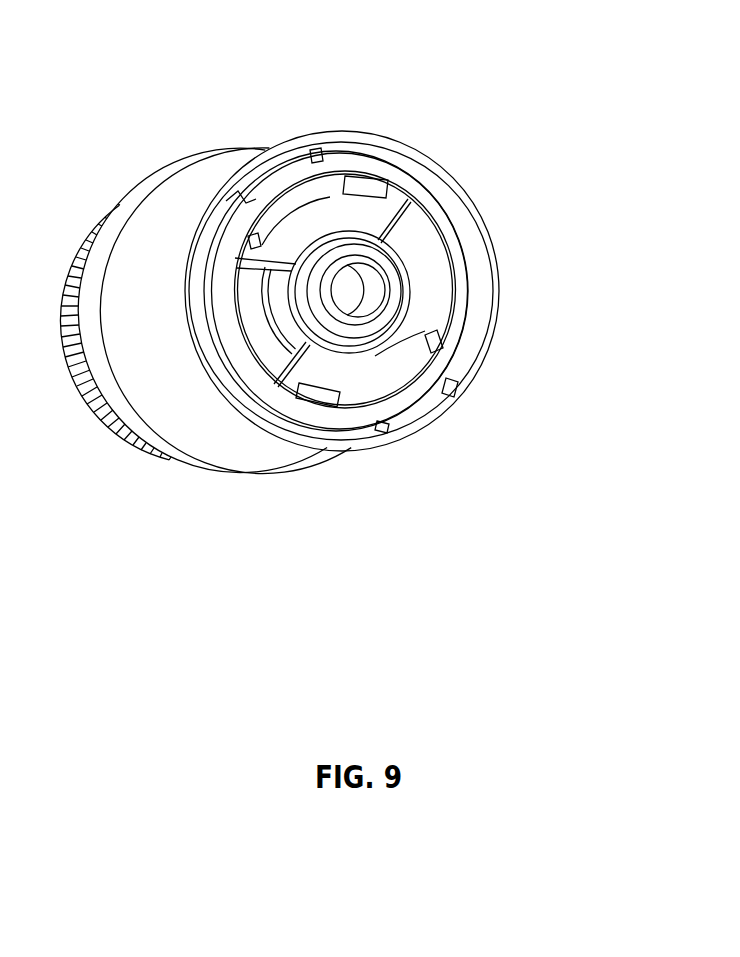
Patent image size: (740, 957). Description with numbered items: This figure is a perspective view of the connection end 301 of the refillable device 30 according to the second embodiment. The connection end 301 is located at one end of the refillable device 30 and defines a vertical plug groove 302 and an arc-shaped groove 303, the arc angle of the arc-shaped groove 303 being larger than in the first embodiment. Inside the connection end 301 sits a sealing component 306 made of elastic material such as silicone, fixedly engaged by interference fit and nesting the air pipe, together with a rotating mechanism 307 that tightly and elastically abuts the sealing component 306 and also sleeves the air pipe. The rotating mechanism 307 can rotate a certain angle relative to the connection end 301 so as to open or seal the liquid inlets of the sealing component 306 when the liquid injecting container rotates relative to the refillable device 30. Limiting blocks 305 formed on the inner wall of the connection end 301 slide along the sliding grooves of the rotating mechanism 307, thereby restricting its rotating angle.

The refillable device 30 is at (233, 148).
The connection end 301 is at (420, 174).
The vertical plug groove 302 is at (410, 410).
The arc-shaped groove 303 is at (210, 347).
The limiting blocks 305 is at (372, 176).
The sealing component 306 is at (427, 262).
The rotating mechanism 307 is at (327, 217).